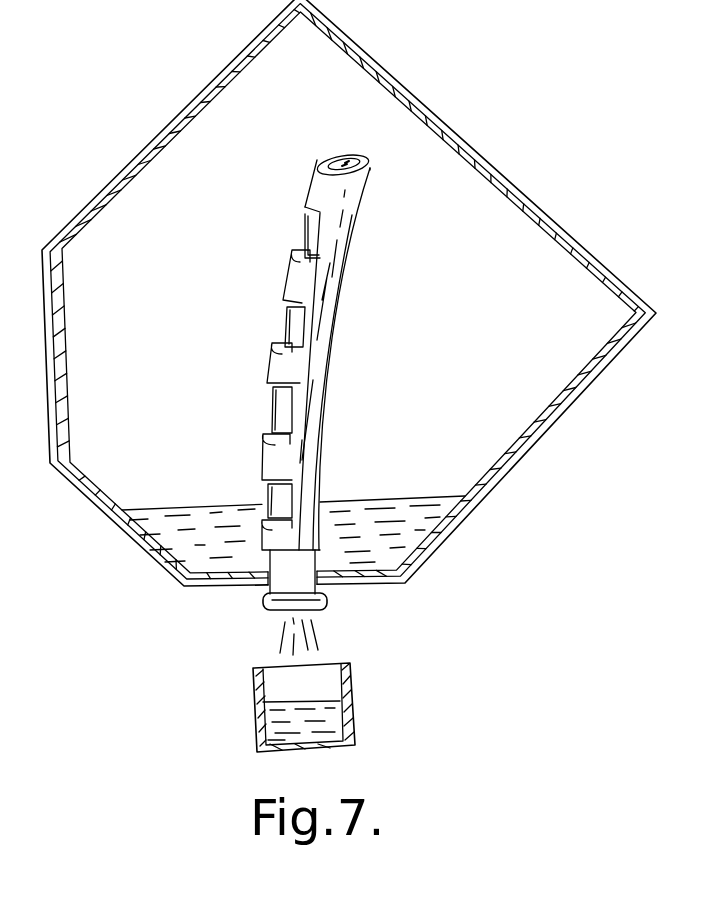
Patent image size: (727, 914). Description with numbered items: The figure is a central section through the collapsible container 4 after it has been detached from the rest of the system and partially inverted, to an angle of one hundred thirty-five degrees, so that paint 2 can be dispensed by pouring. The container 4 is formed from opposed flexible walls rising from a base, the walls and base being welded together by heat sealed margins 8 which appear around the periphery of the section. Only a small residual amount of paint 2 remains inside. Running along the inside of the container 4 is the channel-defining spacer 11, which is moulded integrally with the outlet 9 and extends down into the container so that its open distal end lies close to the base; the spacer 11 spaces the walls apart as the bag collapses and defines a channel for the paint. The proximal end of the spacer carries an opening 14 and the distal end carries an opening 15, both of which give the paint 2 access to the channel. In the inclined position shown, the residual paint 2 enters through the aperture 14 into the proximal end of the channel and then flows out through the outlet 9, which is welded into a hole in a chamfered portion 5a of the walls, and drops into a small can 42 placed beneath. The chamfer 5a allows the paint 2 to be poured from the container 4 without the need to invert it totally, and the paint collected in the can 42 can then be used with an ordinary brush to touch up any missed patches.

The paint 2 is at (385, 498).
The collapsible container 4 is at (429, 307).
The chamfered portion 5a is at (238, 593).
The heat sealed margins 8 is at (513, 467).
The outlet 9 is at (323, 596).
The channel-defining spacer 11 is at (302, 370).
The opening 14 is at (263, 497).
The opening 15 is at (345, 160).
The small can 42 is at (253, 698).